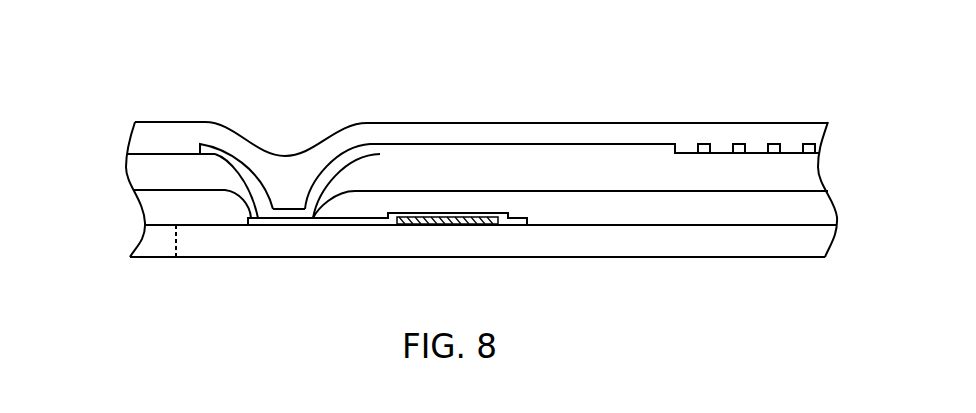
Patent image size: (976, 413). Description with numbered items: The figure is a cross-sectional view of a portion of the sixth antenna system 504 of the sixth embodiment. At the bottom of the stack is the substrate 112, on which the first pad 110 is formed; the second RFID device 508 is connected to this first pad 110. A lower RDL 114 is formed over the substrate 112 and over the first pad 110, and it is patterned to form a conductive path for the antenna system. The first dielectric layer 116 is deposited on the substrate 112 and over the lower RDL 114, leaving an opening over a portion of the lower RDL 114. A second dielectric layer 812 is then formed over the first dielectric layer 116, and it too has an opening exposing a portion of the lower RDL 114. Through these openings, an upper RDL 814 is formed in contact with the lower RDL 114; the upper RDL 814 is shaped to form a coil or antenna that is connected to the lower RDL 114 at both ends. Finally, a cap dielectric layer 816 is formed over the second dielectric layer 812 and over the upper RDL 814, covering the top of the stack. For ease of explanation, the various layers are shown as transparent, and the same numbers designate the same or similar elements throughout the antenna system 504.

The sixth antenna system 504 is at (158, 60).
The cap dielectric layer 816 is at (143, 145).
The second dielectric layer 812 is at (140, 172).
The upper RDL 814 is at (243, 168).
The first dielectric layer 116 is at (143, 213).
The lower RDL 114 is at (355, 218).
The first pad 110 is at (447, 222).
The substrate 112 is at (147, 248).
The second RFID device 508 is at (653, 250).